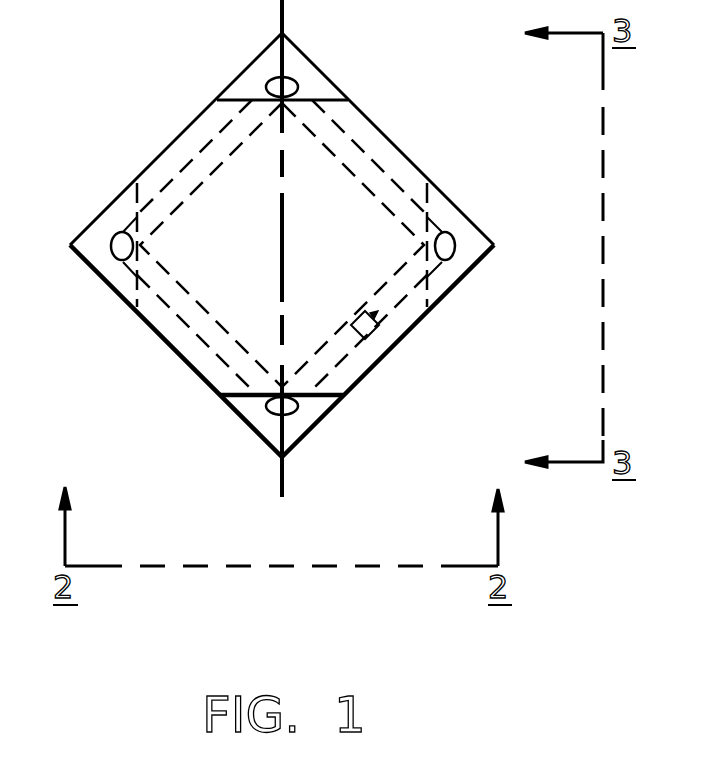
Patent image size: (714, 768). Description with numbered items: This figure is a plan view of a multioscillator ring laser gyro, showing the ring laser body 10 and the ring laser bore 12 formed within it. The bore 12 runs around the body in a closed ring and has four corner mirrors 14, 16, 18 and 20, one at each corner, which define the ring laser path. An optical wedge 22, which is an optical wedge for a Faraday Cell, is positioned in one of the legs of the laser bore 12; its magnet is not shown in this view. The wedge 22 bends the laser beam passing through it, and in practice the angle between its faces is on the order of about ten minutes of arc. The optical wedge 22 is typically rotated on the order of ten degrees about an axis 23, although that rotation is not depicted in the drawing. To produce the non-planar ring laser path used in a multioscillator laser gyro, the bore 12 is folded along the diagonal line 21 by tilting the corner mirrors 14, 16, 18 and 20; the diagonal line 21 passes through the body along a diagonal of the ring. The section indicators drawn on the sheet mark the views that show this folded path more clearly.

The ring laser body 10 is at (356, 108).
The ring laser bore 12 is at (380, 163).
The corner mirror 14 is at (448, 242).
The corner mirror 16 is at (292, 410).
The corner mirror 18 is at (118, 258).
The corner mirror 20 is at (277, 83).
The diagonal line 21 is at (280, 470).
The optical wedge 22 is at (350, 304).
The axis 23 is at (373, 335).